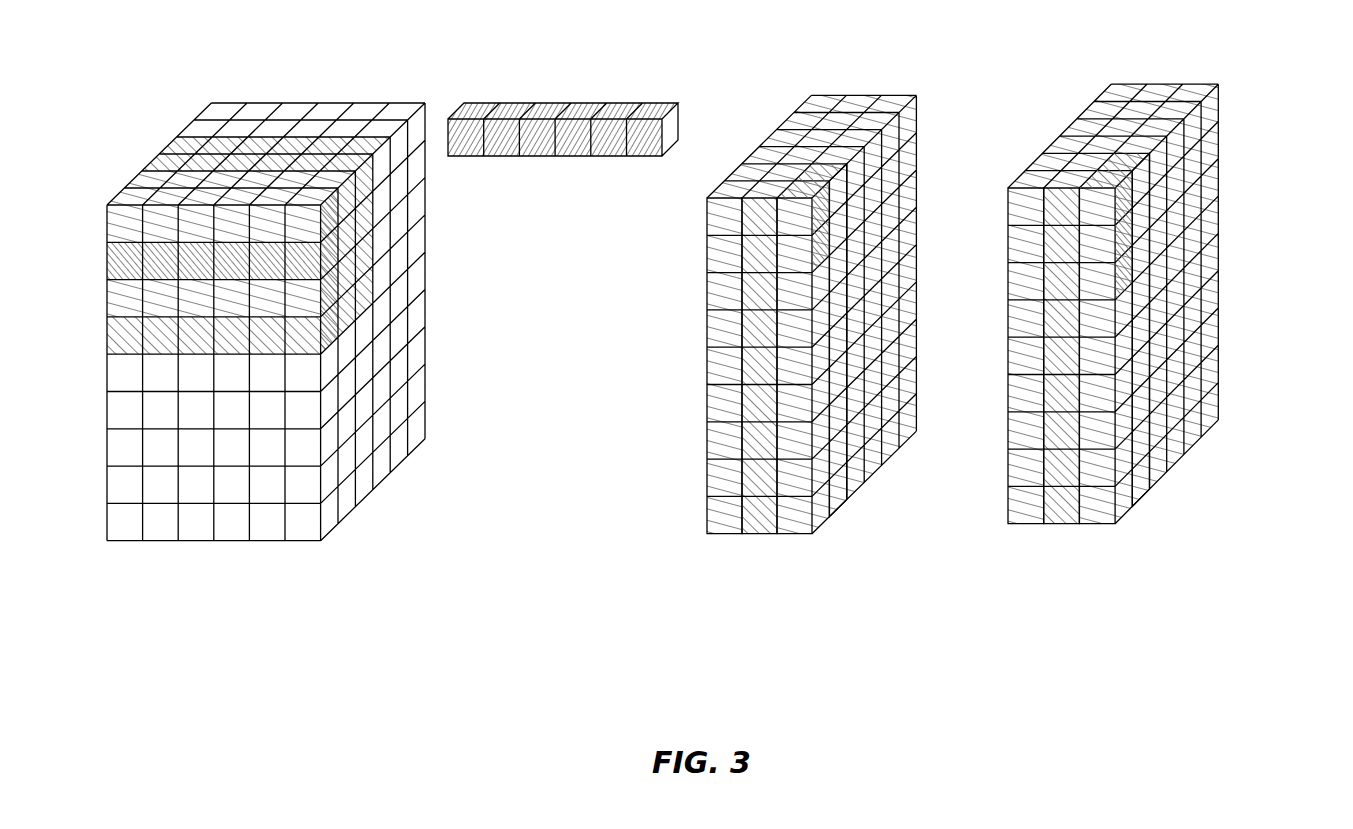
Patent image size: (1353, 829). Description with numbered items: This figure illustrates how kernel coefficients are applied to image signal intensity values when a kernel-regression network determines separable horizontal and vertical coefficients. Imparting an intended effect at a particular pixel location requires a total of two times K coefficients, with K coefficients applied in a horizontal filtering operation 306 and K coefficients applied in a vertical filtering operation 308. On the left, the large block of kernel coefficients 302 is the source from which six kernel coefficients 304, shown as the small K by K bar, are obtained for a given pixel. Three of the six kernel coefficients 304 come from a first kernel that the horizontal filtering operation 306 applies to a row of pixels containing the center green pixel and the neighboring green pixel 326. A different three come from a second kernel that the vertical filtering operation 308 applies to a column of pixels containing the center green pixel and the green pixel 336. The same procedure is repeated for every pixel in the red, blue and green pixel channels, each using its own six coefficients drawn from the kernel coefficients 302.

The kernel coefficients 302 is at (170, 137).
The six kernel coefficients 304 is at (585, 103).
The horizontal filtering operation 306 is at (840, 328).
The vertical filtering operation 308 is at (1143, 317).
The green pixel 326 is at (855, 210).
The green pixel 336 is at (1137, 170).